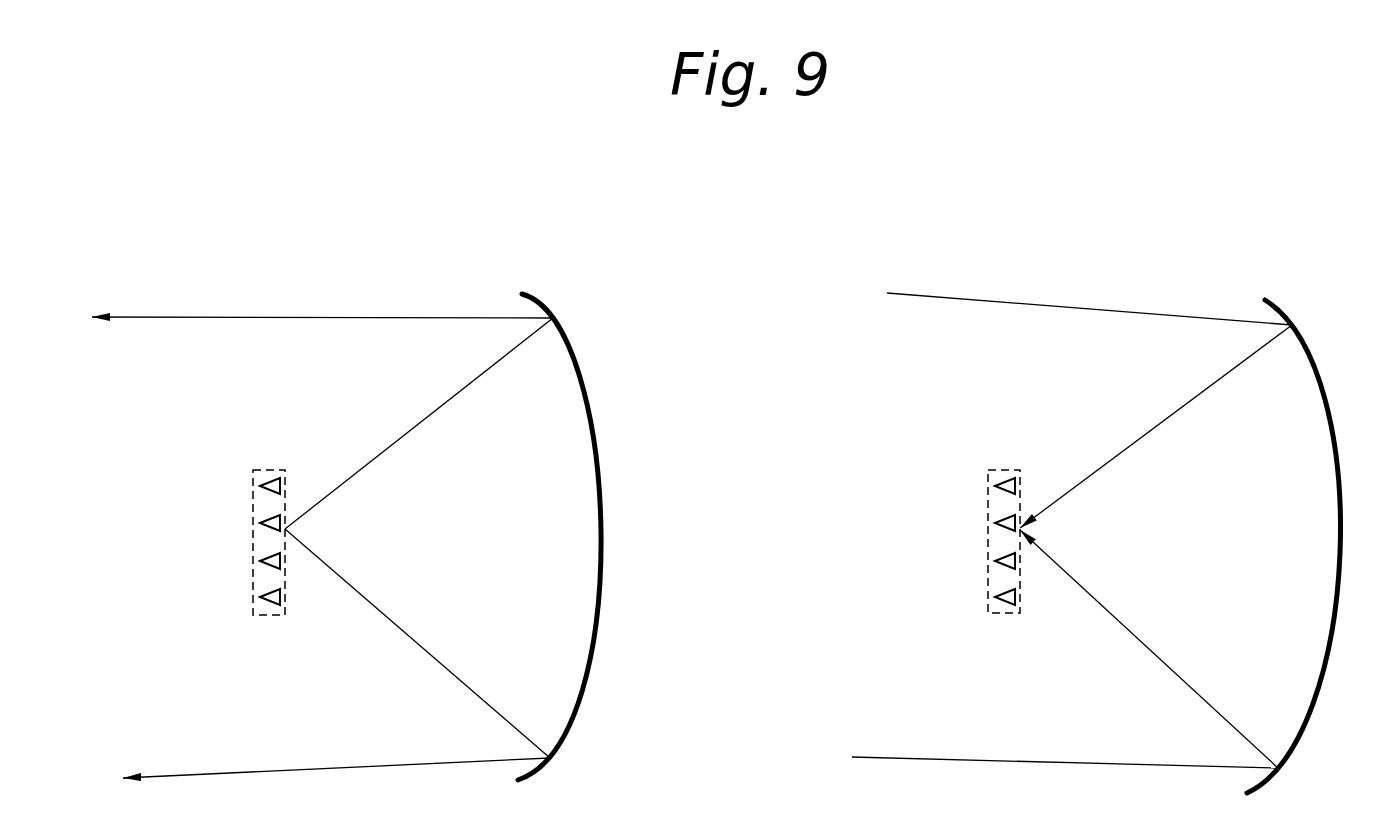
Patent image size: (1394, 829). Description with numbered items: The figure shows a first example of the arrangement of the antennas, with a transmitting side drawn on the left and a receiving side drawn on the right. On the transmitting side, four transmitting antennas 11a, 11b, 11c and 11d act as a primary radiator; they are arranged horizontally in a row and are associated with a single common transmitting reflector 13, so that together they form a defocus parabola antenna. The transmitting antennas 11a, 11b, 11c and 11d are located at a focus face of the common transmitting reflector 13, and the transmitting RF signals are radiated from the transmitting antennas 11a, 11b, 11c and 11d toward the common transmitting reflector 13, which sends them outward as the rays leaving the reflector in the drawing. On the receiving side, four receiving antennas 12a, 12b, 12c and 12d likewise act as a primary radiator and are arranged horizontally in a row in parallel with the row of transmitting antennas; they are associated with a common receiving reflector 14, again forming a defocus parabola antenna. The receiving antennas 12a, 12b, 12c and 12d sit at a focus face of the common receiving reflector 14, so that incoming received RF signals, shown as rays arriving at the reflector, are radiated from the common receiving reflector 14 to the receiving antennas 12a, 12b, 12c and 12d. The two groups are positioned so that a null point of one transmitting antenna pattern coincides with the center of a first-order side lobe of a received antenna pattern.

The transmitting antenna 11a is at (260, 480).
The transmitting antenna 11b is at (262, 526).
The transmitting antenna 11c is at (262, 561).
The transmitting antenna 11d is at (262, 602).
The receiving antenna 12a is at (995, 480).
The receiving antenna 12b is at (997, 526).
The receiving antenna 12c is at (997, 561).
The receiving antenna 12d is at (997, 602).
The common transmitting reflector 13 is at (565, 332).
The common receiving reflector 14 is at (1304, 334).